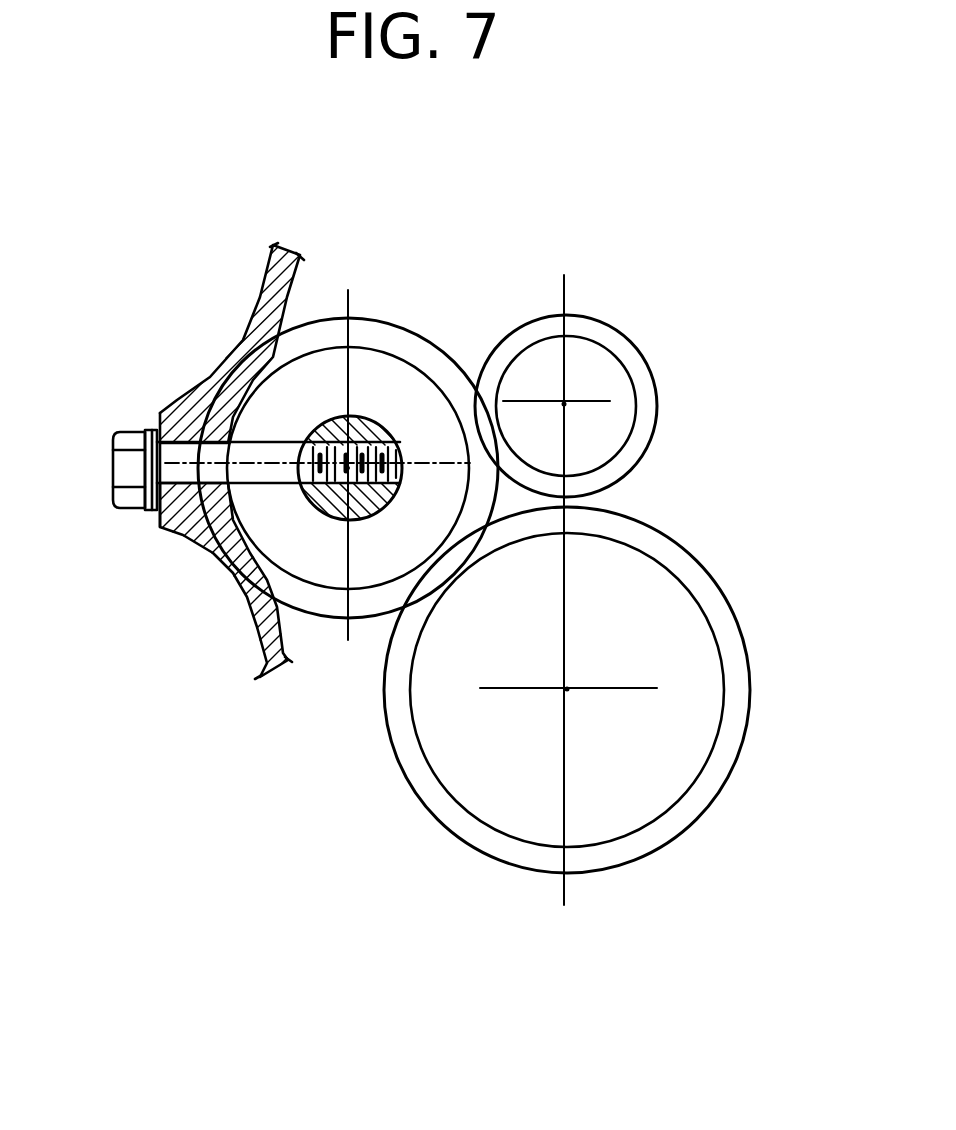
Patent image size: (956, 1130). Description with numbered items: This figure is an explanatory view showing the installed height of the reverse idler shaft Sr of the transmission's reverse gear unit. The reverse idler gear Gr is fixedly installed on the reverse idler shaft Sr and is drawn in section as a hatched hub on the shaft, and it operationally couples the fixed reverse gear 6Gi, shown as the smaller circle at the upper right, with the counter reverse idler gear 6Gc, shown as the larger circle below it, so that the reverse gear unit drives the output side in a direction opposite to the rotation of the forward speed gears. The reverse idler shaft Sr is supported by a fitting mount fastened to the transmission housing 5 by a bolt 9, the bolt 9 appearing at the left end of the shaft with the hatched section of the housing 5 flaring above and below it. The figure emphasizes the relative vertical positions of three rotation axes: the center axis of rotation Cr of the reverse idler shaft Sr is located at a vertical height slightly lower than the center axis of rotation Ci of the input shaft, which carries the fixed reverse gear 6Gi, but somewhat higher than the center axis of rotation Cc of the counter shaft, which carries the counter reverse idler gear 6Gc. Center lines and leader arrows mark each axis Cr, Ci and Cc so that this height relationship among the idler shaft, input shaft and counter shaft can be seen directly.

The transmission housing 5 is at (267, 308).
The bolt 9 is at (114, 480).
The reverse idler gear Gr is at (365, 318).
The reverse idler shaft Sr is at (383, 424).
The center axis of rotation of the reverse idler shaft Cr is at (323, 527).
The fixed reverse gear 6Gi is at (583, 316).
The center axis of rotation of the input shaft Ci is at (578, 394).
The counter reverse idler gear 6Gc is at (690, 833).
The center axis of rotation of the counter shaft Cc is at (580, 678).